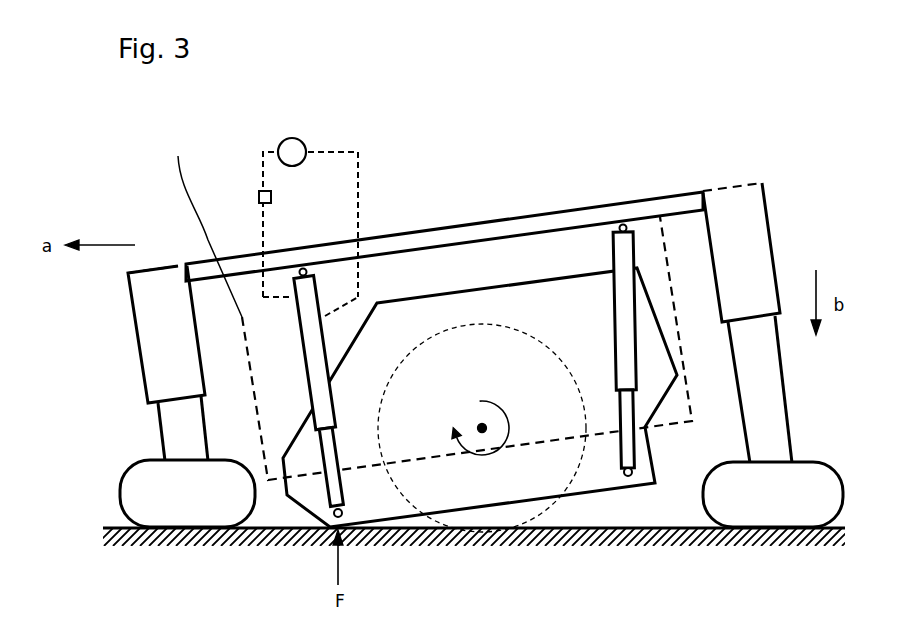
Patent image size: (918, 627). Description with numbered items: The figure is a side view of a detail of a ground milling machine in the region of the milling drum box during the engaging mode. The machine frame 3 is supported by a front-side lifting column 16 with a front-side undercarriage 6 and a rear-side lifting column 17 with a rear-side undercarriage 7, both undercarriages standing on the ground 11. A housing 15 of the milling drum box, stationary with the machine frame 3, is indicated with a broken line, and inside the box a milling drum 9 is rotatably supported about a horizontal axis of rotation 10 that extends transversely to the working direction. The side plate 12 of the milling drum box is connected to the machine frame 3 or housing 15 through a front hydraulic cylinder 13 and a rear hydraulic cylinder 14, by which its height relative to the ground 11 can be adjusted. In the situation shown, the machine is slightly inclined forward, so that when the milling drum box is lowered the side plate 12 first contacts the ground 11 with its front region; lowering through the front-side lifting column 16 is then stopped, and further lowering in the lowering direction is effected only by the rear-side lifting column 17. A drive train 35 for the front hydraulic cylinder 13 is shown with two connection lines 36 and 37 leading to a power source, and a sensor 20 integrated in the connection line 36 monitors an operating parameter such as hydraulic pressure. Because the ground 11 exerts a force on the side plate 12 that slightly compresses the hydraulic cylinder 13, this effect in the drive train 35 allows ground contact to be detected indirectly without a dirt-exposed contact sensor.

The machine frame 3 is at (429, 237).
The front-side undercarriage 6 is at (168, 488).
The rear-side undercarriage 7 is at (773, 483).
The milling drum 9 is at (577, 482).
The axis of rotation 10 is at (482, 432).
The ground 11 is at (750, 530).
The side plate 12 is at (546, 280).
The hydraulic cylinder 13 is at (322, 330).
The hydraulic cylinder 14 is at (628, 288).
The housing 15 is at (431, 308).
The front-side lifting column 16 is at (163, 297).
The rear-side lifting column 17 is at (750, 237).
The sensor 20 is at (272, 190).
The drive train 35 is at (335, 169).
The connection line 36 is at (259, 187).
The connection line 37 is at (360, 222).